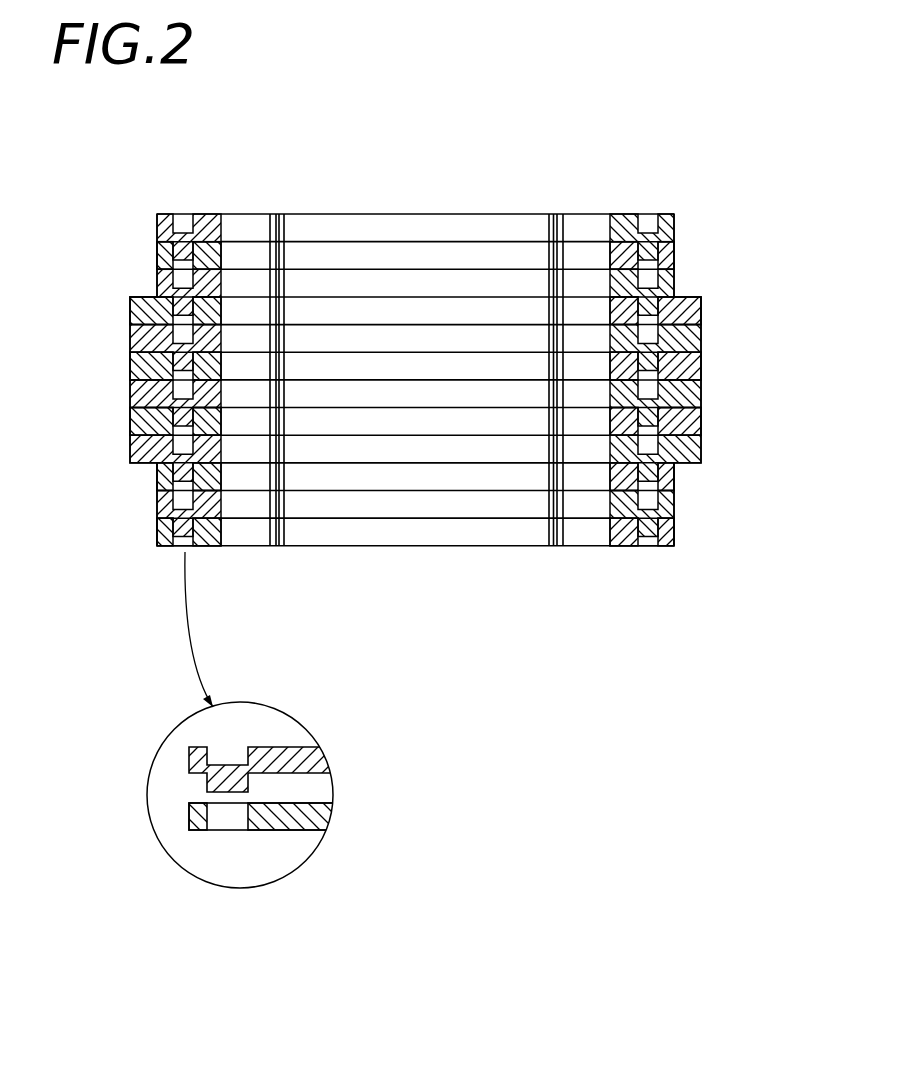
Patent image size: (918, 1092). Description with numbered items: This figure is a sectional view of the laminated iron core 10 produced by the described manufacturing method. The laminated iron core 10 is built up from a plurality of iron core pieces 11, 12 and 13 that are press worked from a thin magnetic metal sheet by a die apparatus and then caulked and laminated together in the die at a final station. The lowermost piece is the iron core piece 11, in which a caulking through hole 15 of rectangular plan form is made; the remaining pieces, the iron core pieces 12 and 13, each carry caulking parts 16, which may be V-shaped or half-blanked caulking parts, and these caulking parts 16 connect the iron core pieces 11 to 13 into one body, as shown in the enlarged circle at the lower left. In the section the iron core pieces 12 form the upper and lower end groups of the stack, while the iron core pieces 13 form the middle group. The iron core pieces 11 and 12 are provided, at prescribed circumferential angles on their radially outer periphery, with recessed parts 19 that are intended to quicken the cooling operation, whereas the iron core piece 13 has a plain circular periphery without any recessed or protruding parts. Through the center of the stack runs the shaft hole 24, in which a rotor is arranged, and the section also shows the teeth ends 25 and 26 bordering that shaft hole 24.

The laminated iron core 10 is at (578, 202).
The iron core piece 11 is at (678, 538).
The iron core piece 12 is at (745, 215).
The iron core piece 13 is at (745, 297).
The caulking through hole 15 is at (238, 820).
The caulking part 16 is at (247, 785).
The recessed part 19 is at (158, 278).
The shaft hole 24 is at (438, 547).
The teeth end 25 is at (549, 521).
The teeth end 26 is at (284, 521).